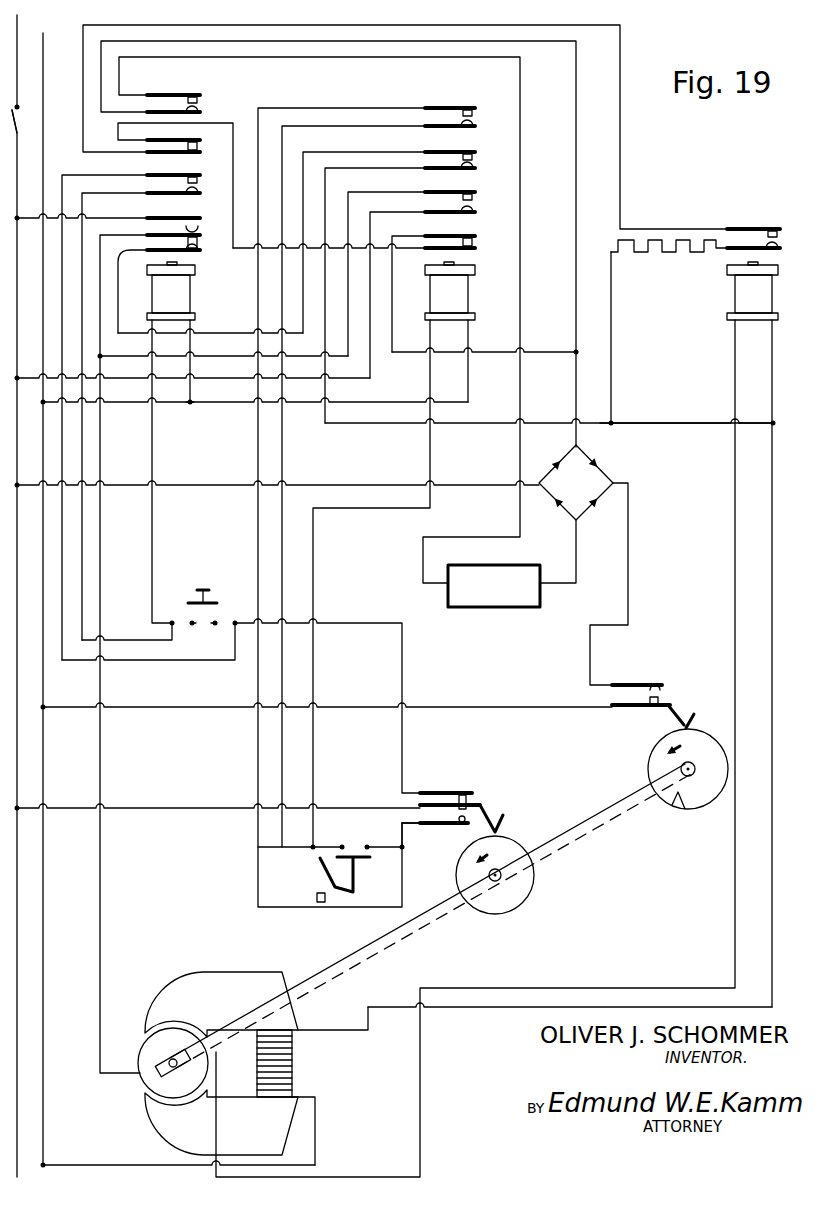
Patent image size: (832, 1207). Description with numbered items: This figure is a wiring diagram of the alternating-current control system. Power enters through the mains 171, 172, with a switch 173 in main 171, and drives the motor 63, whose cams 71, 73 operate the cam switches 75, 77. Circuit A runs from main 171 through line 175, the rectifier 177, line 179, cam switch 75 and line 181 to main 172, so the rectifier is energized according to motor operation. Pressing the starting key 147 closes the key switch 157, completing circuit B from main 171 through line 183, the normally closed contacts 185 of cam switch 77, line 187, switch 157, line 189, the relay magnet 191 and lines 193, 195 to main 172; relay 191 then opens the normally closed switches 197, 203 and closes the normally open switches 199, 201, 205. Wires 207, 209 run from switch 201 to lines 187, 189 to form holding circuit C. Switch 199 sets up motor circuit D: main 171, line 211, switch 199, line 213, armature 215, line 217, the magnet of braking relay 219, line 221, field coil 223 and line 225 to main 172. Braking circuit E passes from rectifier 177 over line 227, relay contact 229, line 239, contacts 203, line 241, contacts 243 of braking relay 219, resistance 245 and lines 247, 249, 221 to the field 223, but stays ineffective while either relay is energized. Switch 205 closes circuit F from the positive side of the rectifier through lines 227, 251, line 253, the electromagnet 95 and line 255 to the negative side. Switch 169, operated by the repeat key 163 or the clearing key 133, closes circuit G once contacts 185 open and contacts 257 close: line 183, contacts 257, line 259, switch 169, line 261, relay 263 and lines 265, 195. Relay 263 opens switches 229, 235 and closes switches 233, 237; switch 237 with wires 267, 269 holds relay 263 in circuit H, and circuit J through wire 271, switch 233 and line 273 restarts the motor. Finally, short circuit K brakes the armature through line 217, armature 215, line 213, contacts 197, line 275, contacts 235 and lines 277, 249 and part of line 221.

The motor 63 is at (205, 973).
The cam 71 is at (680, 798).
The cam 73 is at (523, 888).
The cam switch 75 is at (665, 690).
The cam switch 77 is at (494, 796).
The electromagnet 95 is at (540, 567).
The clearing key 133 is at (325, 870).
The starting key 147 is at (206, 590).
The key switch 157 is at (192, 608).
The repeat key 163 is at (316, 897).
The switch 169 is at (356, 846).
The main 171 is at (19, 20).
The main 172 is at (44, 43).
The switch 173 is at (19, 130).
The line 175 is at (174, 485).
The rectifier 177 is at (577, 470).
The line 179 is at (628, 520).
The line 181 is at (53, 707).
The line 183 is at (120, 808).
The normally closed contacts 185 is at (470, 792).
The line 187 is at (233, 625).
The line 189 is at (155, 575).
The relay magnet 191 is at (183, 290).
The line 193 is at (192, 324).
The line 195 is at (157, 404).
The normally closed switch 197 is at (198, 250).
The normally open switch 199 is at (196, 232).
The switch 201 is at (200, 186).
The normally closed switch 203 is at (200, 148).
The normally open switch 205 is at (200, 110).
The wire 207 is at (89, 174).
The wire 209 is at (107, 193).
The line 211 is at (118, 218).
The line 213 is at (118, 237).
The armature 215 is at (150, 1048).
The line 217 is at (736, 380).
The braking relay 219 is at (736, 295).
The line 221 is at (772, 396).
The field coil 223 is at (293, 1062).
The line 225 is at (312, 1096).
The line 227 is at (423, 236).
The normally closed relay contact 229 is at (476, 240).
The switch 233 is at (483, 195).
The normally closed switch 235 is at (476, 158).
The switch 237 is at (476, 112).
The line 239 is at (240, 120).
The line 241 is at (97, 26).
The contacts 243 is at (788, 214).
The resistance 245 is at (650, 255).
The line 247 is at (612, 330).
The line 249 is at (650, 423).
The line 251 is at (577, 56).
The line 253 is at (140, 62).
The line 255 is at (567, 583).
The contacts 257 is at (472, 813).
The line 259 is at (402, 847).
The line 261 is at (430, 329).
The relay 263 is at (460, 291).
The line 265 is at (468, 330).
The wire 267 is at (352, 108).
The wire 269 is at (367, 114).
The wire 271 is at (398, 212).
The line 273 is at (424, 192).
The line 275 is at (357, 152).
The line 277 is at (326, 172).